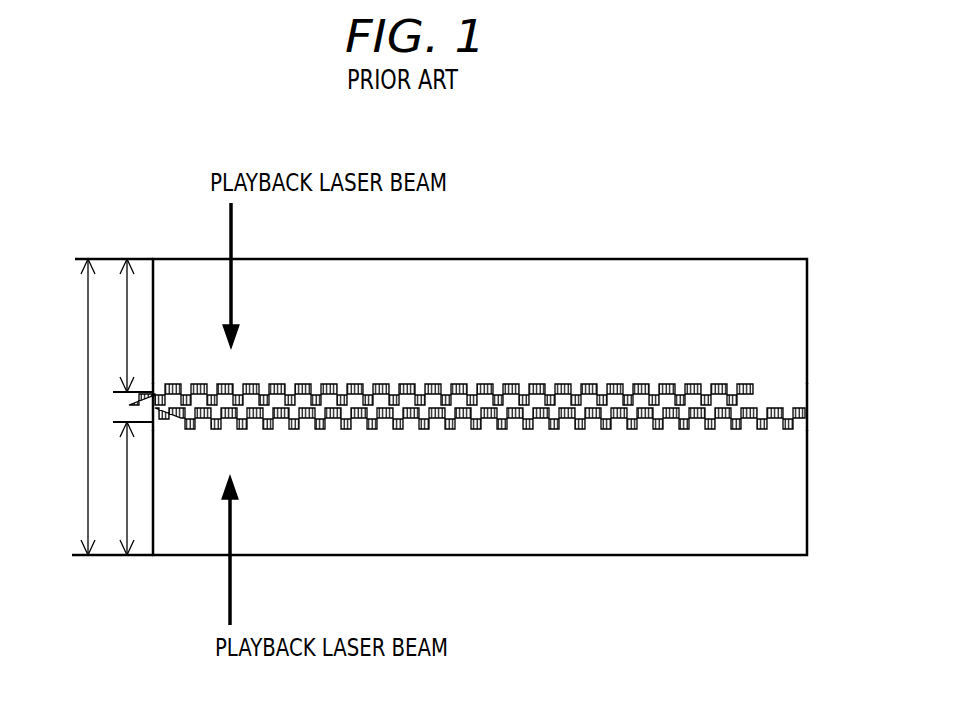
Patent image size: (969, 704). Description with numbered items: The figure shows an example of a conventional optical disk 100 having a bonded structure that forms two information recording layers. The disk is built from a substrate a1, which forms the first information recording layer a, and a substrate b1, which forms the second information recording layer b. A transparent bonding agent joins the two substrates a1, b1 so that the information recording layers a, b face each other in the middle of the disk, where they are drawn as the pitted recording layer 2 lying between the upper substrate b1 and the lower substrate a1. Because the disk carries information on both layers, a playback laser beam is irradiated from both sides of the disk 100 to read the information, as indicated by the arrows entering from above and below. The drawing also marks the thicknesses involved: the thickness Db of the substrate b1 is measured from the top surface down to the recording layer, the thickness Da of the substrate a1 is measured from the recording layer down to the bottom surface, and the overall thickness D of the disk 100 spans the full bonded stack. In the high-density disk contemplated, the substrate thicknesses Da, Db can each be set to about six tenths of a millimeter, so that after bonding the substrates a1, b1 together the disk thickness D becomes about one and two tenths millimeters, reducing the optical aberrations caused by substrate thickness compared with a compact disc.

The optical disk 100 is at (113, 134).
The recording layer 2 is at (800, 400).
The first information recording layer a is at (812, 428).
The second information recording layer b is at (813, 383).
The substrate a1 is at (793, 523).
The substrate b1 is at (788, 316).
The thickness of the disk D is at (86, 388).
The thickness of substrate b1 Db is at (127, 312).
The thickness of substrate a1 Da is at (125, 490).